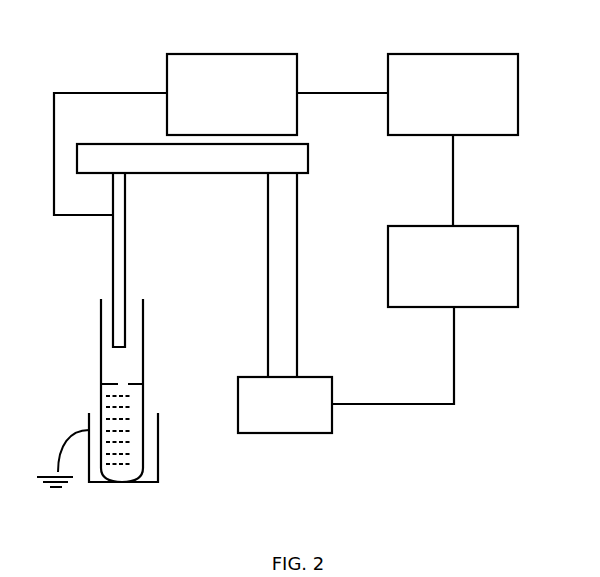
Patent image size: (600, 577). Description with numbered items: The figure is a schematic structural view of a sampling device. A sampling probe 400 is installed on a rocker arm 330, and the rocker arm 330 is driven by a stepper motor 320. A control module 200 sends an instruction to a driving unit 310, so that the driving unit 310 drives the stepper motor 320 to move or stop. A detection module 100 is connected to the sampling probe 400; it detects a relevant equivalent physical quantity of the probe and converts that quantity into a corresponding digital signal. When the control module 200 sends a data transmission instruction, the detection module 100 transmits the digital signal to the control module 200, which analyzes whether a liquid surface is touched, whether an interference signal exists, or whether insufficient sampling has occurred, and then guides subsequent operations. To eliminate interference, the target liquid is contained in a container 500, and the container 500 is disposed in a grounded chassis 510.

The detection module 100 is at (233, 54).
The control module 200 is at (455, 54).
The driving unit 310 is at (518, 267).
The stepper motor 320 is at (310, 433).
The rocker arm 330 is at (308, 160).
The sampling probe 400 is at (113, 237).
The container 500 is at (101, 330).
The grounded chassis 510 is at (158, 455).